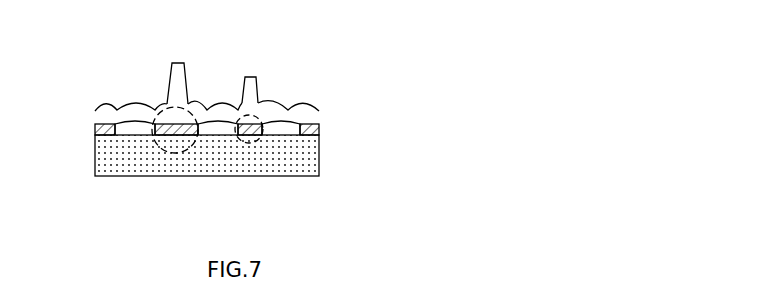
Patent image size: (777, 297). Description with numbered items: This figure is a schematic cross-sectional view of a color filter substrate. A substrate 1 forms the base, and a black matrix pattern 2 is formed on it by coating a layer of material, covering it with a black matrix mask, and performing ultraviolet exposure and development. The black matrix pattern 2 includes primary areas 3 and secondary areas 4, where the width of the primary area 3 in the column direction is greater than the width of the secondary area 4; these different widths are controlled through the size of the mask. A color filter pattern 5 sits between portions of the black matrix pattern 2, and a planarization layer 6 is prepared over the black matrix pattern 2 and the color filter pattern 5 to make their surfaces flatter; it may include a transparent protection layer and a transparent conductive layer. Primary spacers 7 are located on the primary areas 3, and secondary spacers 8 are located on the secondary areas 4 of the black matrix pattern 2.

The substrate 1 is at (309, 163).
The black matrix pattern 2 is at (307, 132).
The primary area 3 is at (178, 131).
The secondary area 4 is at (249, 131).
The color filter pattern 5 is at (279, 128).
The planarization layer 6 is at (107, 104).
The primary spacer 7 is at (178, 82).
The secondary spacer 8 is at (248, 82).